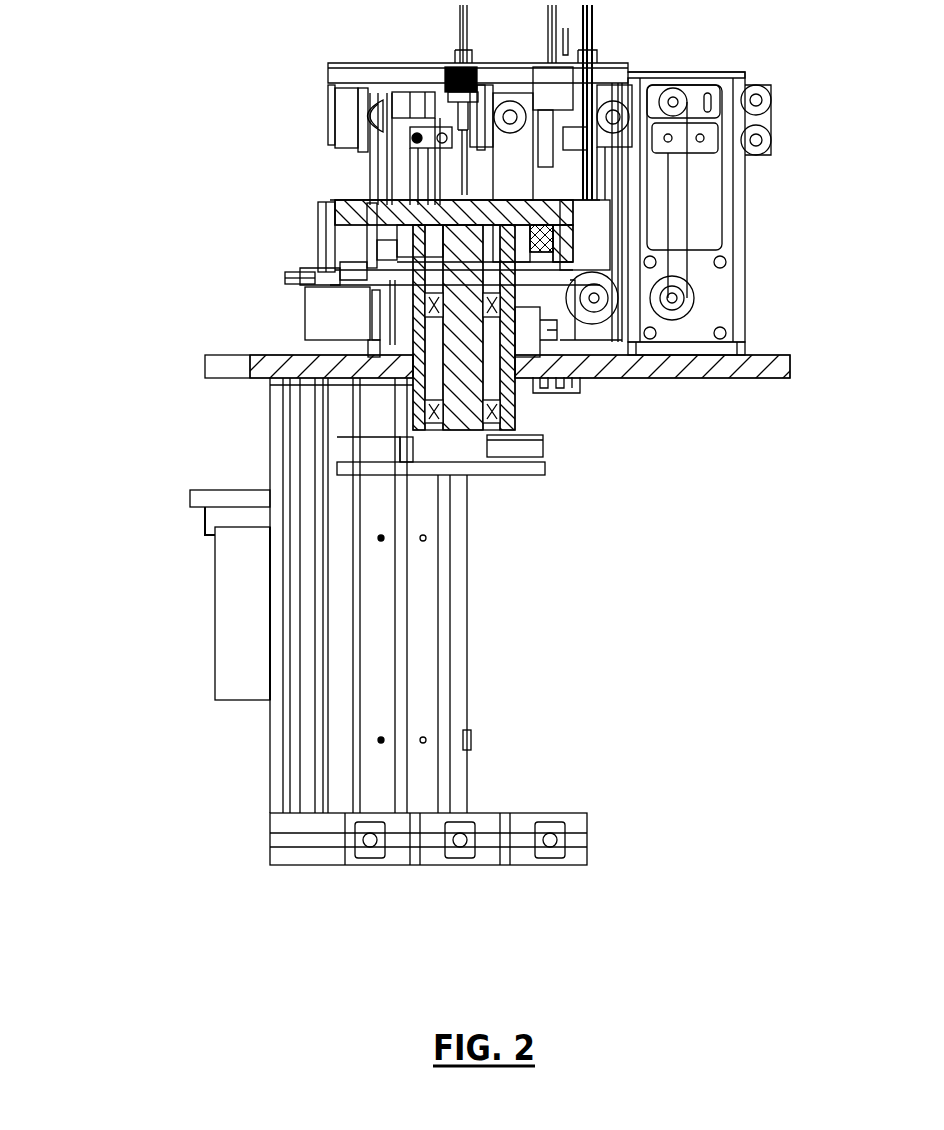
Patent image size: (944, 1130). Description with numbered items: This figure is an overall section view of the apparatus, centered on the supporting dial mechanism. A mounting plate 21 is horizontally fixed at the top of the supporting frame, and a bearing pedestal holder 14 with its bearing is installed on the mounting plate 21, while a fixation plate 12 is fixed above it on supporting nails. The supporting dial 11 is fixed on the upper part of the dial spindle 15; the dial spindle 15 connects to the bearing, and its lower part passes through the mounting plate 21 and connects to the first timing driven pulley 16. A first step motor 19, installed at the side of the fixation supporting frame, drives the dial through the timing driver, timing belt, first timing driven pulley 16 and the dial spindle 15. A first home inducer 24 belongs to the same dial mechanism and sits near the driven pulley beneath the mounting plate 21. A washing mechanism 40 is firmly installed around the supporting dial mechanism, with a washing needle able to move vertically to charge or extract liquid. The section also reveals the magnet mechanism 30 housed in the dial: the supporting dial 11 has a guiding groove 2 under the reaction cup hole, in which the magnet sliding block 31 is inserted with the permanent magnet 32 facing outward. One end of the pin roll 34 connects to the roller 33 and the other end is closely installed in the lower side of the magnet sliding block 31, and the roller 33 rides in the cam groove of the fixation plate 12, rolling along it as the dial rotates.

The guiding groove 2 is at (417, 237).
The supporting dial 11 is at (375, 235).
The fixation plate 12 is at (293, 277).
The bearing pedestal holder 14 is at (398, 345).
The dial spindle 15 is at (452, 233).
The first timing driven pulley 16 is at (522, 447).
The first step motor 19 is at (230, 575).
The mounting plate 21 is at (230, 366).
The first home inducer 24 is at (550, 468).
The magnet mechanism 30 is at (322, 221).
The magnet sliding block 31 is at (360, 217).
The permanent magnet 32 is at (358, 250).
The roller 33 is at (335, 270).
The pin roll 34 is at (345, 258).
The washing mechanism 40 is at (727, 231).